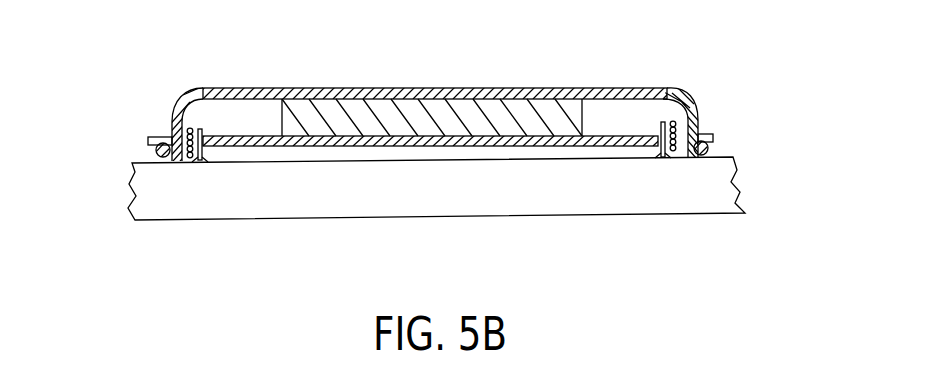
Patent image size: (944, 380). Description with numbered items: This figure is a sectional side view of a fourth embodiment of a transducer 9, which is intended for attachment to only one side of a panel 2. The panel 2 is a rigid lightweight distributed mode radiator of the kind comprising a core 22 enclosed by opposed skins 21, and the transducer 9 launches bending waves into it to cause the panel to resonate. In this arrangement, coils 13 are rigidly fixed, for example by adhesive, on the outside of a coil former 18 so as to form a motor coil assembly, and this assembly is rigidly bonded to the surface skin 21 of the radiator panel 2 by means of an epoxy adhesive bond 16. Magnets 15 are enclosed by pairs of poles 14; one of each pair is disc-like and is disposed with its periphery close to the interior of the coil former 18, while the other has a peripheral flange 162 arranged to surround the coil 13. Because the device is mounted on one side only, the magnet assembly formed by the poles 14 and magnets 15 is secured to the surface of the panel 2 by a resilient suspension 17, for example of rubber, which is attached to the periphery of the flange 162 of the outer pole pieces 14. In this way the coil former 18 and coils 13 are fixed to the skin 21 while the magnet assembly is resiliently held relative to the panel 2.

The panel 2 is at (453, 190).
The transducer 9 is at (391, 110).
The coils 13 is at (186, 158).
The poles 14 is at (628, 136).
The magnets 15 is at (331, 90).
The epoxy adhesive bond 16 is at (662, 158).
The resilient suspension 17 is at (155, 152).
The coil former 18 is at (400, 107).
The skins 21 is at (453, 186).
The core 22 is at (468, 190).
The peripheral flange 162 is at (170, 123).